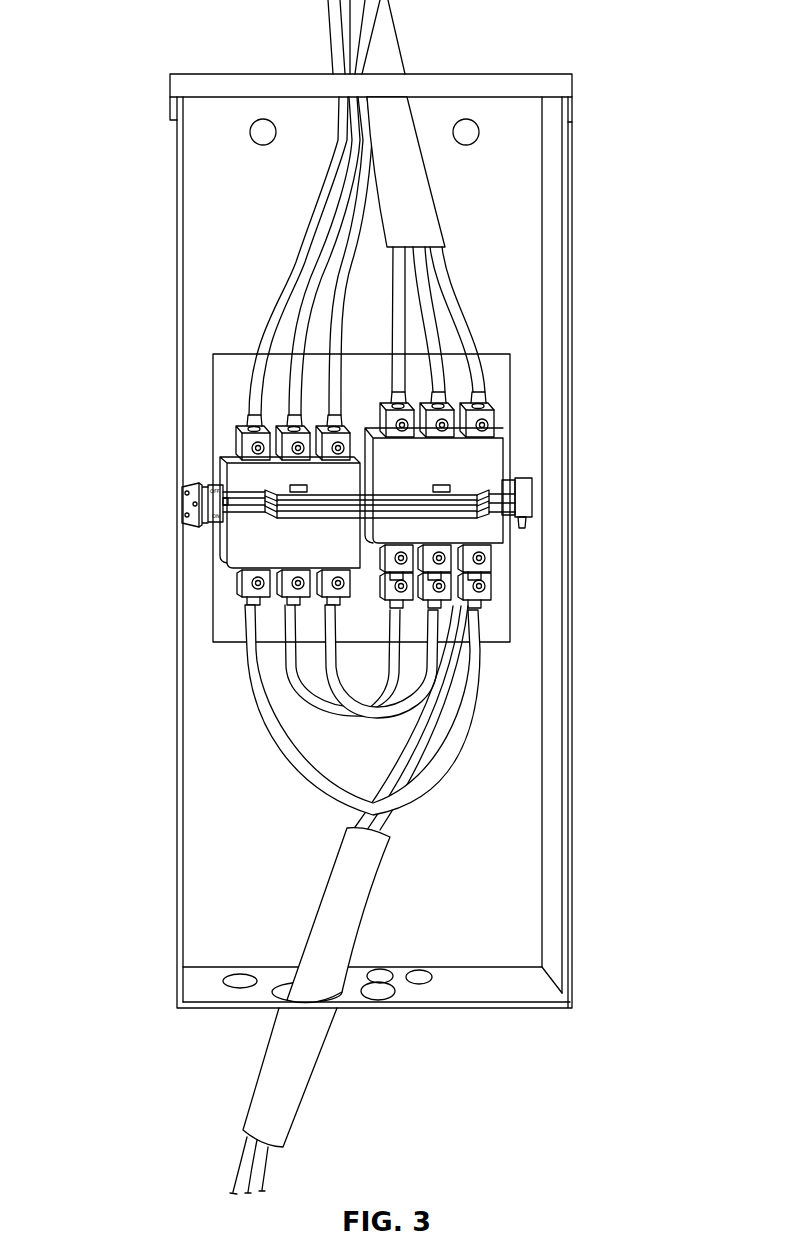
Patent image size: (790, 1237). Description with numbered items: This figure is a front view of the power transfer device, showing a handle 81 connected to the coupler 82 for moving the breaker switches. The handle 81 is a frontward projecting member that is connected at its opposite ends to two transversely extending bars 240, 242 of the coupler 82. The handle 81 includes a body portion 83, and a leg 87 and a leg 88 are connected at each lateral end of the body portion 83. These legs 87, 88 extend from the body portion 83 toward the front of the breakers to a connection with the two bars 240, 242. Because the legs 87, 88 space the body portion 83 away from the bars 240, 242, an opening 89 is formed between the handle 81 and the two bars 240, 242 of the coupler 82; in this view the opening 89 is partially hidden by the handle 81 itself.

The handle 81 is at (285, 498).
The body portion 83 is at (400, 503).
The leg 87 is at (486, 489).
The transversely extending bar 240 is at (504, 478).
The coupler 82 is at (528, 498).
The transversely extending bar 242 is at (499, 509).
The leg 88 is at (270, 512).
The opening 89 is at (283, 527).